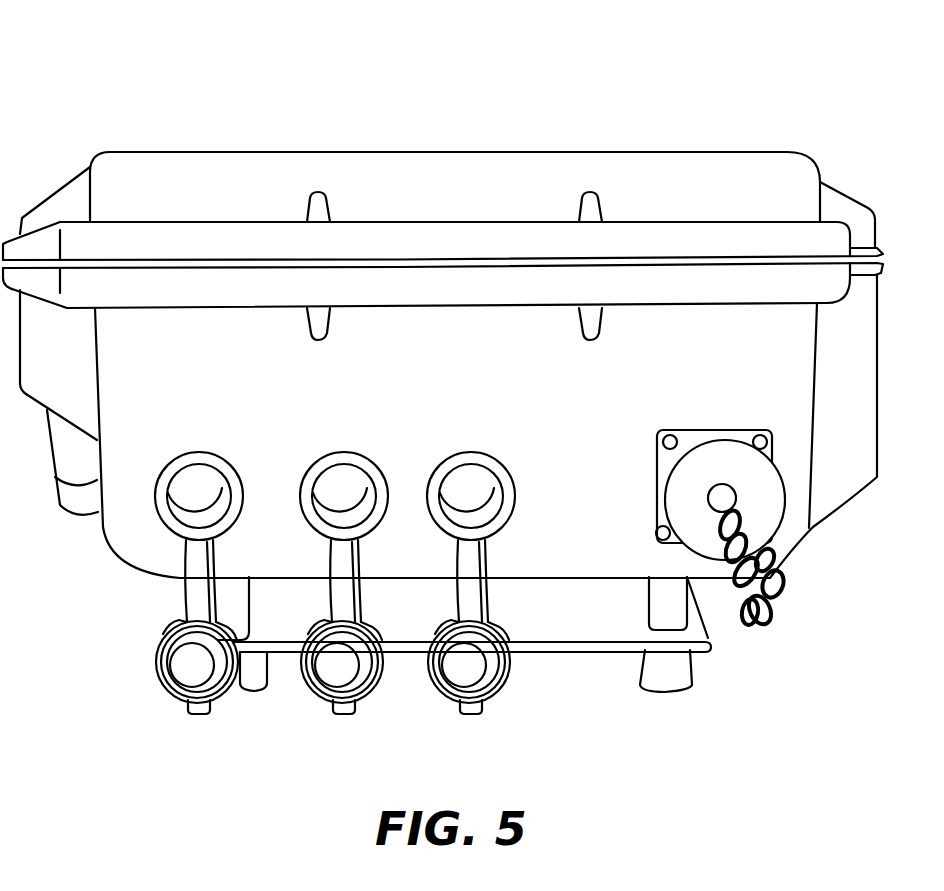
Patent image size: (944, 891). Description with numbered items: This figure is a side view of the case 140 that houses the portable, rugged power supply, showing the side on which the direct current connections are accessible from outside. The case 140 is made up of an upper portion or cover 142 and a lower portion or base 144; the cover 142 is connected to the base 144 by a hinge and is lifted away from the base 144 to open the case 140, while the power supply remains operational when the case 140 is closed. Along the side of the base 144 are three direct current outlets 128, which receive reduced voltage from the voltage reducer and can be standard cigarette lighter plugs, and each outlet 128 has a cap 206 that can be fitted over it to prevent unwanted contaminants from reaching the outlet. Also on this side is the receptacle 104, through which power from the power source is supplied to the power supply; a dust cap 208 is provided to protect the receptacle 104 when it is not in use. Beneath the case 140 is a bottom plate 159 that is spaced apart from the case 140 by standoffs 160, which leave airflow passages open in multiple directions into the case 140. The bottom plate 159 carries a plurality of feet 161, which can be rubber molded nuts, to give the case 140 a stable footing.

The case 140 is at (443, 327).
The cover 142 is at (430, 152).
The base 144 is at (800, 552).
The direct current outlets 128 is at (231, 466).
The caps 206 is at (178, 698).
The standoffs 160 is at (232, 598).
The bottom plate 159 is at (560, 650).
The feet 161 is at (258, 688).
The receptacle 104 is at (722, 430).
The dust cap 208 is at (662, 485).